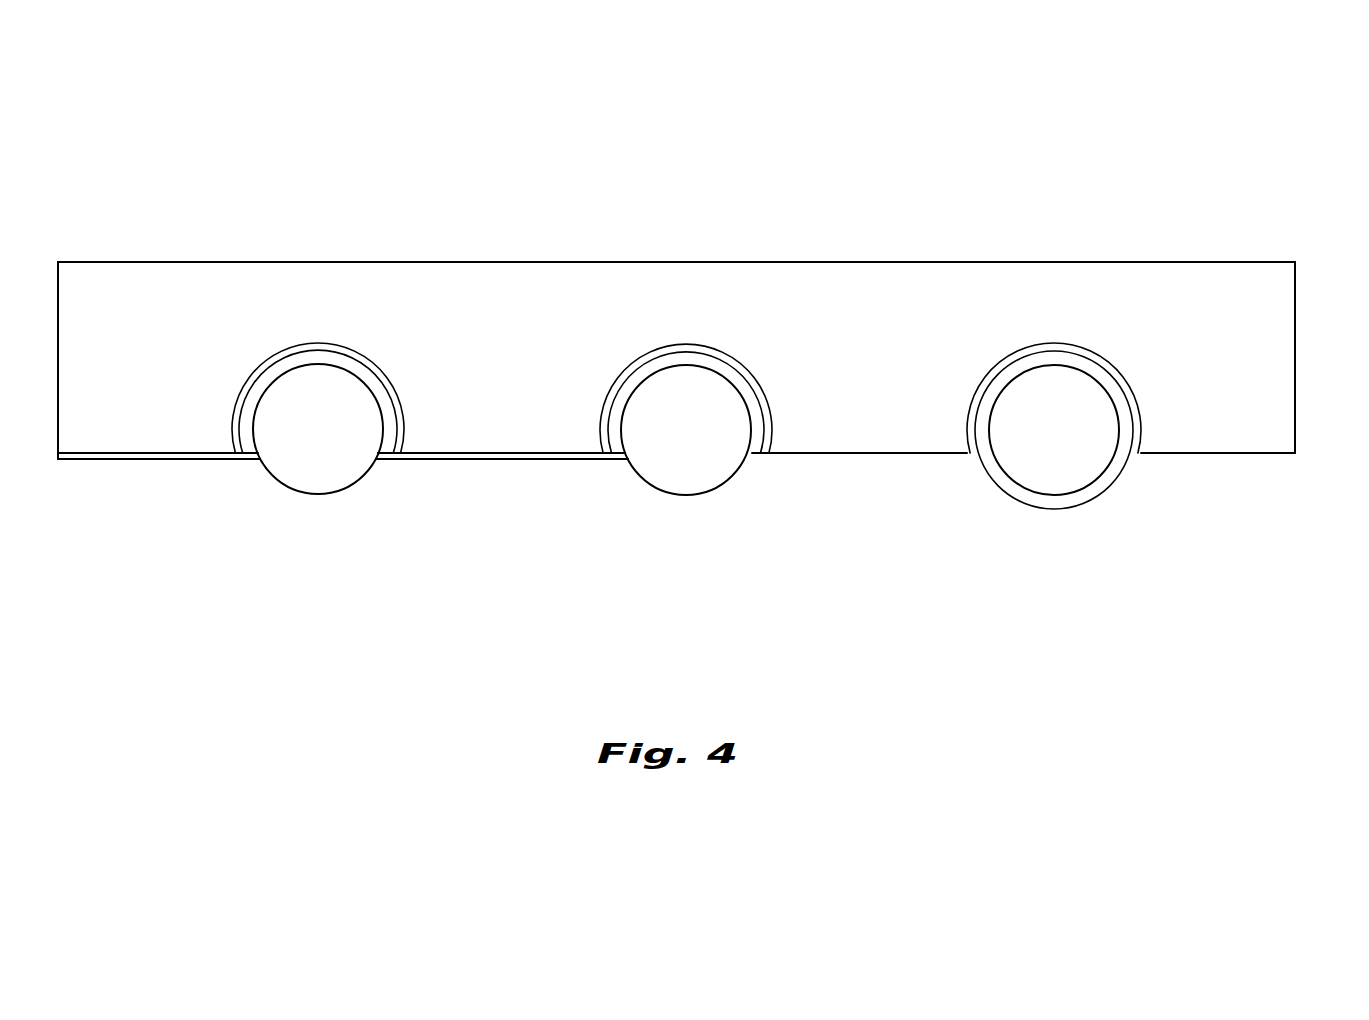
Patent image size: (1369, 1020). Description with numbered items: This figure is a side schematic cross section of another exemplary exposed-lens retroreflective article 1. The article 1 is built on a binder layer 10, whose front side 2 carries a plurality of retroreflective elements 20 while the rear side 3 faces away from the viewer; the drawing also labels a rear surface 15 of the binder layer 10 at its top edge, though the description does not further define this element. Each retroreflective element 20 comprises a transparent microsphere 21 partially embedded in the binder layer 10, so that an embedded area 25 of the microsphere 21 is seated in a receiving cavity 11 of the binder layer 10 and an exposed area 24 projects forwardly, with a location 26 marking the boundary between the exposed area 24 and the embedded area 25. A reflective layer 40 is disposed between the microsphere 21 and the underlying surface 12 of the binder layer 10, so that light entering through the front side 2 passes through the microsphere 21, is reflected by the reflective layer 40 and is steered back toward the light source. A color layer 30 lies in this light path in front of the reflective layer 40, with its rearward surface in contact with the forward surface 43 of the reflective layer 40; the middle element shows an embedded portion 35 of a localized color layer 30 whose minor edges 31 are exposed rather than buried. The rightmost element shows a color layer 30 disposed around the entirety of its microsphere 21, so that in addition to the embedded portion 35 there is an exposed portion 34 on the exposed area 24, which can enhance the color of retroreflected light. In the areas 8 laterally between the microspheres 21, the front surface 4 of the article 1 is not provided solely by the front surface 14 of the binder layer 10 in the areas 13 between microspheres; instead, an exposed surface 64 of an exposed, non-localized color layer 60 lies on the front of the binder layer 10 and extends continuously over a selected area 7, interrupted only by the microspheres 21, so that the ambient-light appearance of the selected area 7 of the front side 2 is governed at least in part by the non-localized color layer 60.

The exposed-lens retroreflective article 1 is at (69, 119).
The front side 2 is at (631, 662).
The rear side 3 is at (619, 170).
The front surface 4 is at (828, 495).
The selected area 7 is at (246, 624).
The areas laterally between the transparent microspheres 8 is at (78, 516).
The binder layer 10 is at (1280, 348).
The receiving cavity 11 is at (1067, 450).
The underlying surface 12 is at (963, 362).
The areas of binder layer laterally between microspheres 13 is at (433, 572).
The front surface of binder layer 14 is at (895, 456).
The top surface 15 is at (386, 262).
The retroreflective element 20 is at (276, 502).
The transparent microsphere 21 is at (687, 463).
The exposed area 24 is at (337, 492).
The embedded area 25 is at (385, 440).
The boundary location 26 is at (281, 427).
The color layer 30 is at (718, 358).
The minor edges of the color layer 31 is at (757, 494).
The exposed portion of the color layer 34 is at (1015, 493).
The embedded portion of the color layer 35 is at (944, 409).
The reflective layer 40 is at (670, 348).
The forward surface of reflective layer 43 is at (679, 389).
The non-localized color layer 60 is at (150, 460).
The exposed surface of non-localized color layer 64 is at (514, 460).